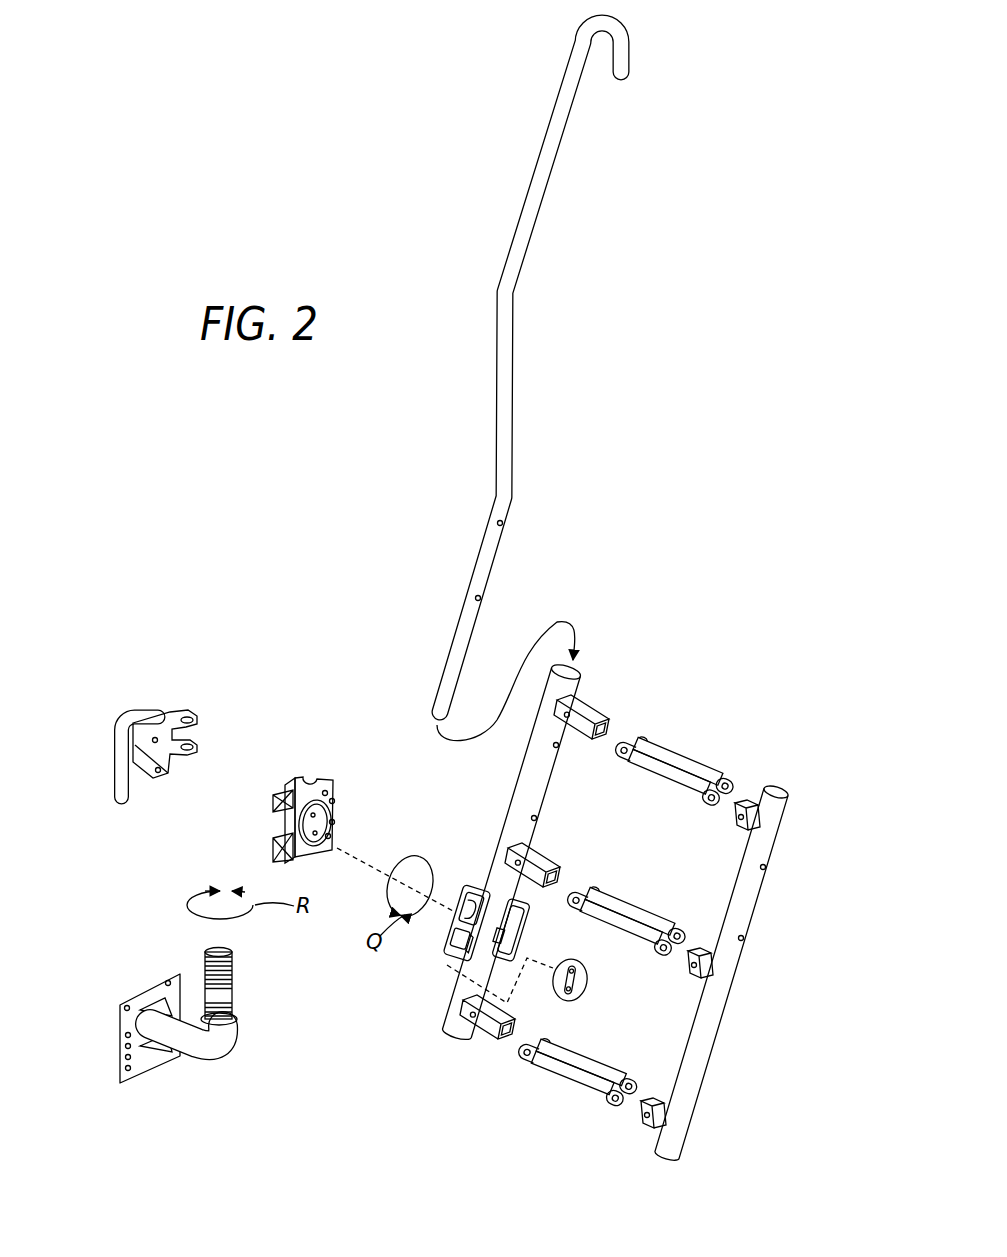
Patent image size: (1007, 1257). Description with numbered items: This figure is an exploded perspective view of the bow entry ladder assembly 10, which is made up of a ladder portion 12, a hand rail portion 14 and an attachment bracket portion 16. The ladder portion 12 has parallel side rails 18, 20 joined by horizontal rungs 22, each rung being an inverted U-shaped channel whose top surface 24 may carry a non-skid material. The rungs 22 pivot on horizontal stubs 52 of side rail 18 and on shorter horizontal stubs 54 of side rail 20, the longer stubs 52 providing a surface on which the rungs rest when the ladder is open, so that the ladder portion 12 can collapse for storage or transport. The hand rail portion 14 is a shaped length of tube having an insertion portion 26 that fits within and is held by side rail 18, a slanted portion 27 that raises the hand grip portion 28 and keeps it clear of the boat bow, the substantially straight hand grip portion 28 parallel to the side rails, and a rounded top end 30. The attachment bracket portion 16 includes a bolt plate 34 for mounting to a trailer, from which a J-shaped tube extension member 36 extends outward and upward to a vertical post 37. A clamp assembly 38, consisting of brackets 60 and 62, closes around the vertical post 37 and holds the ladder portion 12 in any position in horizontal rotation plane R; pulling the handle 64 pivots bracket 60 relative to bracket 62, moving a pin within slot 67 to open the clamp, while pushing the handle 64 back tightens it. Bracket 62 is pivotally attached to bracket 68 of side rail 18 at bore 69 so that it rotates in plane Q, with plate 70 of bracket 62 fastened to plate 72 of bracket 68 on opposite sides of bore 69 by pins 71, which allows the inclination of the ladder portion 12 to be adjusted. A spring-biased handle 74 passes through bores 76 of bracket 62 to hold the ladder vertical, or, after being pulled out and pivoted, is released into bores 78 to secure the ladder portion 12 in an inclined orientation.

The ladder assembly 10 is at (350, 458).
The ladder portion 12 is at (678, 660).
The hand rail portion 14 is at (500, 255).
The attachment bracket portion 16 is at (179, 994).
The side rail 18 is at (490, 802).
The side rail 20 is at (762, 888).
The rungs 22 is at (655, 775).
The top surface 24 is at (680, 765).
The insertion portion 26 is at (470, 590).
The slanted portion 27 is at (505, 412).
The hand grip portion 28 is at (538, 166).
The top end 30 is at (628, 30).
The bolt plate 34 is at (146, 1060).
The J-shaped tube extension member 36 is at (224, 1049).
The vertical post 37 is at (233, 975).
The clamp assembly 38 is at (288, 725).
The horizontal stubs 52 is at (585, 706).
The horizontal stubs 54 is at (745, 802).
The bracket 60 is at (158, 725).
The bracket 62 is at (349, 778).
The handle 64 is at (113, 772).
The slot 67 is at (195, 745).
The bracket 68 is at (470, 888).
The bore 69 is at (455, 937).
The plate 70 is at (320, 822).
The pins 71 is at (565, 988).
The plate 72 is at (583, 983).
The spring-biased handle 74 is at (528, 925).
The bores 76 is at (327, 792).
The bores 78 is at (334, 802).